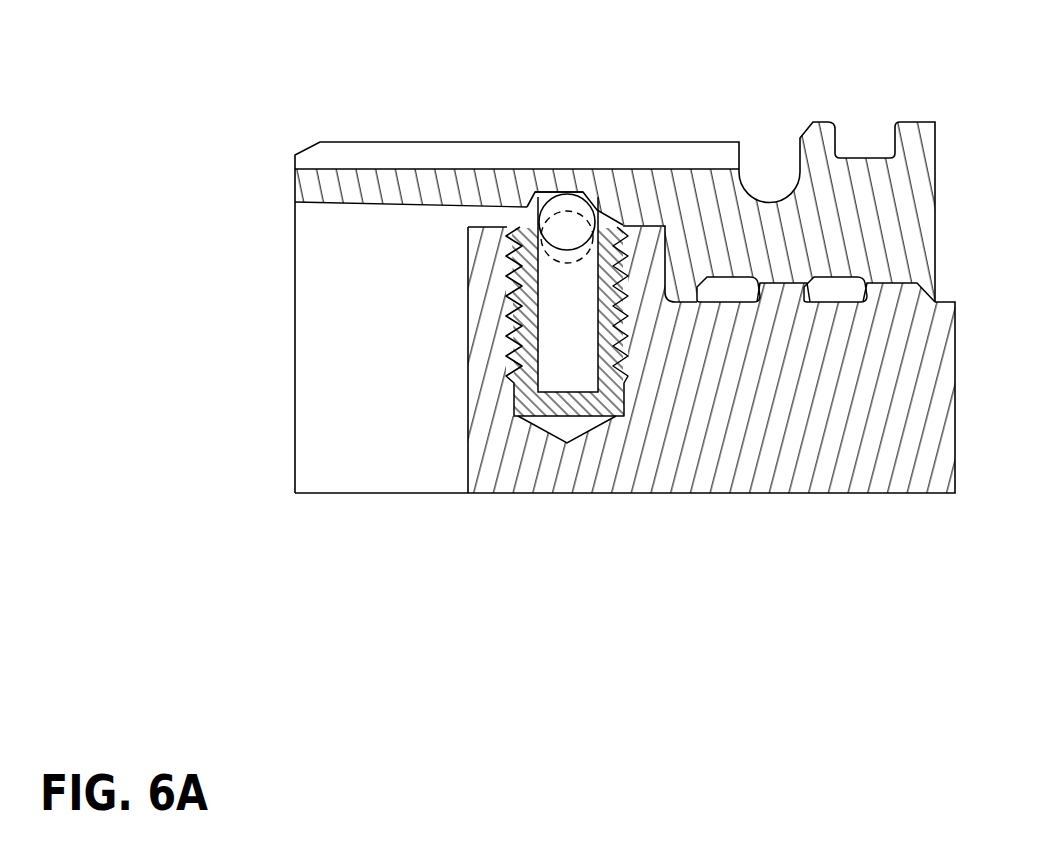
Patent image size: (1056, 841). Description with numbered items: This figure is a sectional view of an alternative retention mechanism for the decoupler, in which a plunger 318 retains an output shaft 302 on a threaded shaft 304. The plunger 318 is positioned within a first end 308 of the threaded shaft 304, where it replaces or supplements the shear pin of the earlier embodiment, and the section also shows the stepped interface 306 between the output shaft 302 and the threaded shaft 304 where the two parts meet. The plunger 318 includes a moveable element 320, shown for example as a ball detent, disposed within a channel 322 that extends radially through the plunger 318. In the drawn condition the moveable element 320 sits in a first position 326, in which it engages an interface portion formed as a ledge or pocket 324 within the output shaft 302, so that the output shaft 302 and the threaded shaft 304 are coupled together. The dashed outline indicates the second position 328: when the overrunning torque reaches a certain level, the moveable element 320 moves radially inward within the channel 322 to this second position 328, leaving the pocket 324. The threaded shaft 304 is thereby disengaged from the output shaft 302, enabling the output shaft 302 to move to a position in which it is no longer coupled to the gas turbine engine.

The output shaft 302 is at (400, 153).
The threaded shaft 304 is at (895, 398).
The interlocking teeth 306 is at (840, 277).
The first end 308 is at (647, 247).
The plunger 318 is at (533, 237).
The moveable element 320 is at (571, 204).
The channel 322 is at (566, 335).
The pocket 324 is at (552, 194).
The first position 326 is at (529, 206).
The second position 328 is at (543, 257).